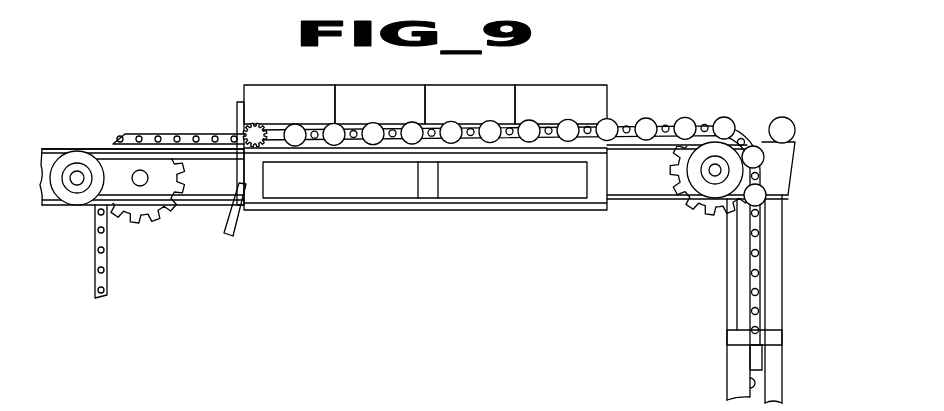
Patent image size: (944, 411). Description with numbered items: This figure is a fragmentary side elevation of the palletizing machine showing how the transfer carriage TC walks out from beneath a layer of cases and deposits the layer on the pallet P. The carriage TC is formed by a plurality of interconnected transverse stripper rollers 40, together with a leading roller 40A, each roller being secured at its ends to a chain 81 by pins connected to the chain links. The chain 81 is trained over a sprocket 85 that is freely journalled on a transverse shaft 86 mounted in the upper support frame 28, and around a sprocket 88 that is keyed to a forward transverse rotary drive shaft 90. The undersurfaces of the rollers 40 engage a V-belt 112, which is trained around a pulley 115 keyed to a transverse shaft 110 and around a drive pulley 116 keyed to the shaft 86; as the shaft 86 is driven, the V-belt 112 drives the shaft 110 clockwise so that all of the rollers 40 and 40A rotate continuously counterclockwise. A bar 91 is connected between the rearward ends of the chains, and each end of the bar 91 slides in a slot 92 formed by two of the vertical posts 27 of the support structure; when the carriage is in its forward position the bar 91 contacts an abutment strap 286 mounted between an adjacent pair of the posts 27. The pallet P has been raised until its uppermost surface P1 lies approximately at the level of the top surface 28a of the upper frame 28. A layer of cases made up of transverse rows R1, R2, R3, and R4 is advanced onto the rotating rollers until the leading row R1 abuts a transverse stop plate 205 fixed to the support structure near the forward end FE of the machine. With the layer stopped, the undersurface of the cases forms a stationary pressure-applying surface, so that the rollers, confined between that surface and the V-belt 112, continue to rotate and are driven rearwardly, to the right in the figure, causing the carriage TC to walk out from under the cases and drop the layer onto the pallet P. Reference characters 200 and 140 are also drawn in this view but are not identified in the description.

The upper support frame 28 is at (45, 207).
The frame top rail 200 is at (103, 148).
The sprocket 88 is at (186, 188).
The transverse shaft 110 is at (78, 177).
The forward transverse rotary drive shaft 90 is at (148, 177).
The pulley 115 is at (75, 196).
The top surface 28a is at (217, 143).
The transverse stop plate 205 is at (240, 102).
The feed end FE is at (235, 115).
The transverse row R1 is at (262, 85).
The transverse row R2 is at (353, 85).
The transverse row R3 is at (443, 85).
The transverse row R4 is at (538, 85).
The pallet P is at (423, 203).
The V-belt 112 is at (228, 187).
The transfer carriage TC is at (654, 109).
The leading roller 40A is at (263, 127).
The stripper rollers 40 is at (451, 121).
The uppermost surface P1 is at (545, 147).
The ball 140 is at (802, 101).
The transverse shaft 86 is at (712, 170).
The sprocket 85 is at (678, 160).
The drive pulley 116 is at (705, 193).
The chain 81 is at (107, 253).
The vertical posts 27 is at (735, 297).
The abutment strap 286 is at (740, 335).
The bar 91 is at (757, 355).
The slot 92 is at (750, 383).